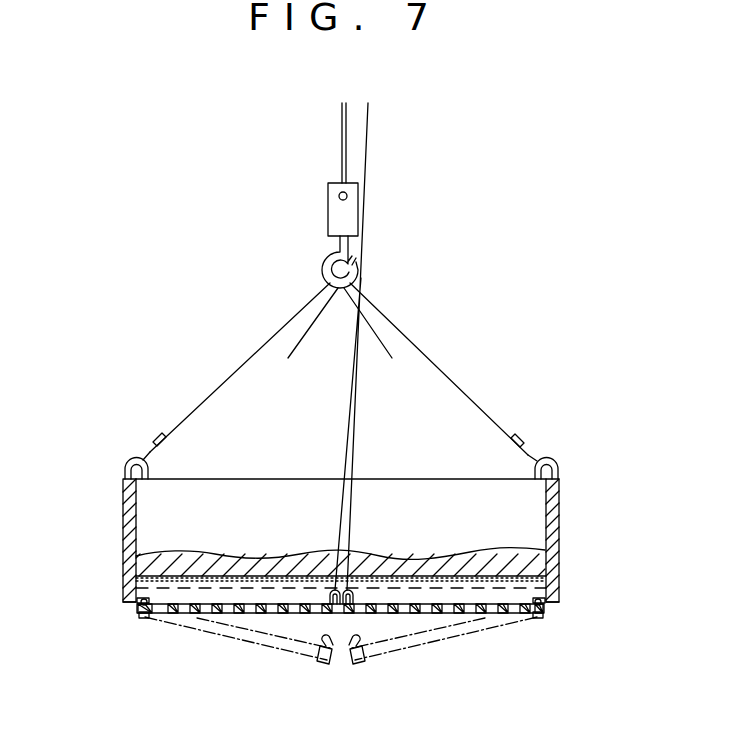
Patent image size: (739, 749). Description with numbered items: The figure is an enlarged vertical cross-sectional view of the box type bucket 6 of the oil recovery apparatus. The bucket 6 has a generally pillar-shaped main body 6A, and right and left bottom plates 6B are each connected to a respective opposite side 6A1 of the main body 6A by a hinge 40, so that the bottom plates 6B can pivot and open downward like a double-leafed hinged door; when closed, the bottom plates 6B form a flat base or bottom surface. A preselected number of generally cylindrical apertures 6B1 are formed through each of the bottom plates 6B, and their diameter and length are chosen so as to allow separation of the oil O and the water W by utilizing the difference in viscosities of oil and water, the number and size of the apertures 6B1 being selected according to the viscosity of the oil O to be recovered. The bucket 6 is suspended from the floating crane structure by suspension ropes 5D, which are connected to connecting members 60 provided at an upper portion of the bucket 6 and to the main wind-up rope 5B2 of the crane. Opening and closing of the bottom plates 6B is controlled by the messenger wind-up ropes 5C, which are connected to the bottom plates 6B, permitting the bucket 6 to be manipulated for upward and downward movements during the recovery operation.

The main wind-up rope 5B2 is at (341, 131).
The wind-up ropes 5C is at (368, 205).
The suspension ropes 5D is at (214, 392).
The connecting members 60 is at (548, 459).
The bucket 6 is at (584, 479).
The main body 6A is at (554, 509).
The opposite side 6A1 is at (125, 522).
The oil O is at (534, 566).
The water W is at (133, 587).
The hinge 40 is at (137, 603).
The bottom plates 6B is at (192, 615).
The apertures 6B1 is at (228, 615).